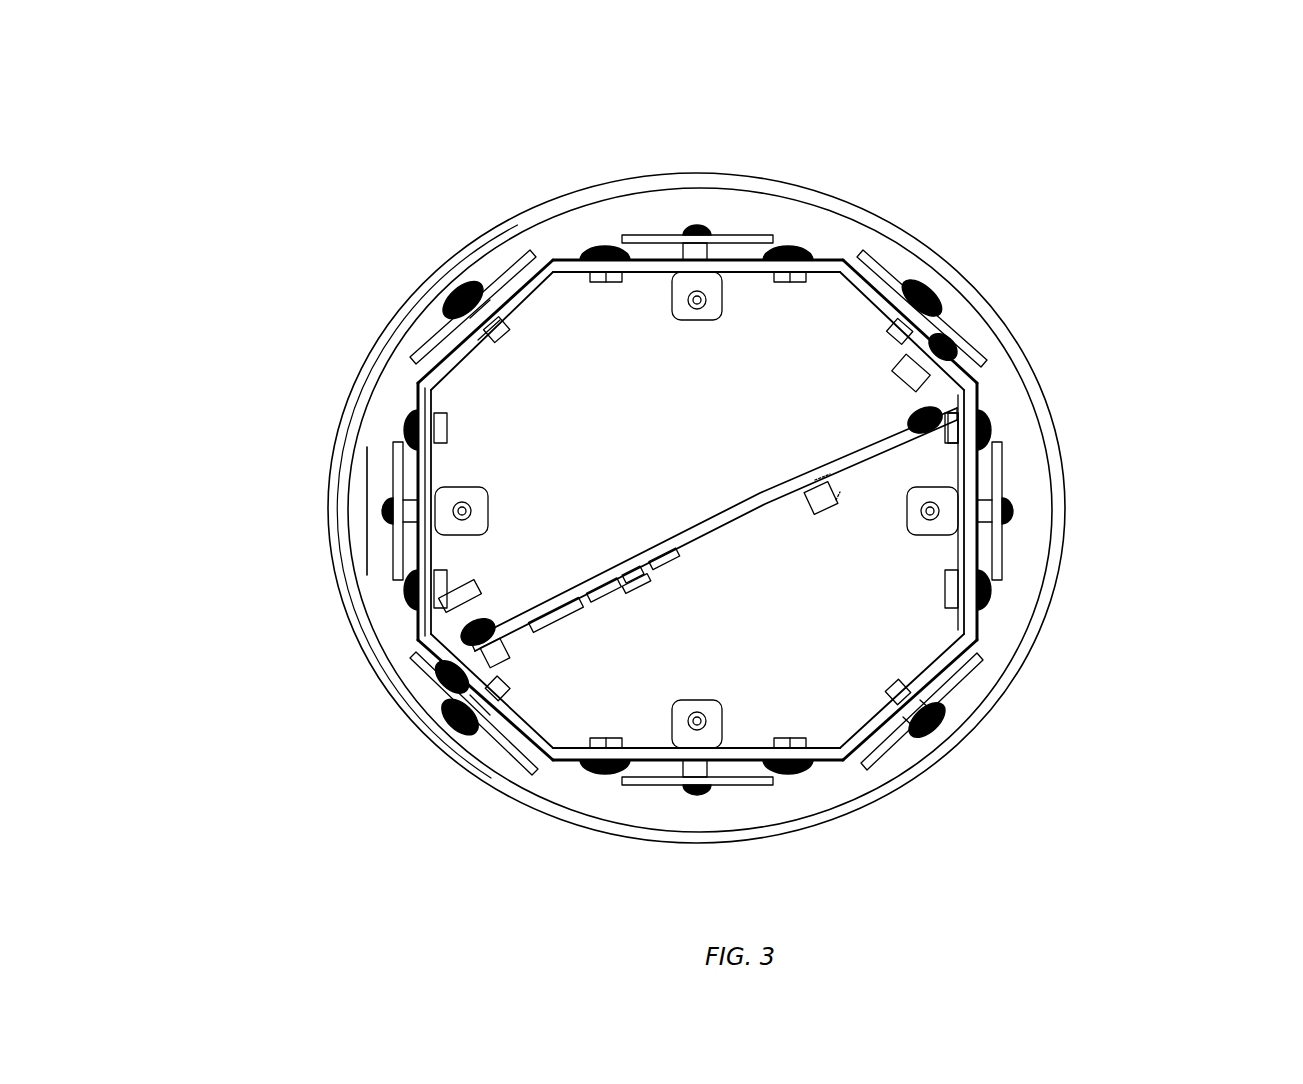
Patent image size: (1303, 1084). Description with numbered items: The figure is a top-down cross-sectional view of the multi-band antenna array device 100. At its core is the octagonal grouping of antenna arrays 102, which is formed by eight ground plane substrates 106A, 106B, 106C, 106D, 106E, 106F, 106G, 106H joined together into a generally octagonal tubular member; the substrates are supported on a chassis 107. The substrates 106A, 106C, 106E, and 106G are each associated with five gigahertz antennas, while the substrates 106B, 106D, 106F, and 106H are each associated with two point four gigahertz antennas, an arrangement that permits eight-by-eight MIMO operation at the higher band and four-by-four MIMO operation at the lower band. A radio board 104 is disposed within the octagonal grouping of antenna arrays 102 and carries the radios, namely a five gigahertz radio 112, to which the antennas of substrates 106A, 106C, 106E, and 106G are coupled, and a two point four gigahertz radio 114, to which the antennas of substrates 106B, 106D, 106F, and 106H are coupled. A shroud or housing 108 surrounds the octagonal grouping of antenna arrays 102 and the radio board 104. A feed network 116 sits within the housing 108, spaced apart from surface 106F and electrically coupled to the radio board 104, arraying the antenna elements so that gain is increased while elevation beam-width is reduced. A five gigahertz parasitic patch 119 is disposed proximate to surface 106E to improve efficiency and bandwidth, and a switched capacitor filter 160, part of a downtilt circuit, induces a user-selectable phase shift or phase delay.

The multi-band antenna array device 100 is at (1077, 168).
The octagonal grouping of antenna arrays 102 is at (1002, 556).
The radio board 104 is at (728, 518).
The ground plane substrate 106A is at (965, 395).
The ground plane substrate 106B is at (937, 662).
The ground plane substrate 106C is at (797, 772).
The ground plane substrate 106D is at (538, 742).
The ground plane substrate 106E is at (408, 604).
The ground plane substrate 106F is at (457, 362).
The ground plane substrate 106G is at (833, 260).
The ground plane substrate 106H is at (872, 298).
The chassis 107 is at (743, 275).
The housing 108 is at (697, 174).
The radio 112 is at (550, 622).
The radio 114 is at (640, 567).
The feed network 116 is at (385, 465).
The 5 GHz parasitic patch 119 is at (366, 502).
The switched capacitor filter 160 is at (832, 505).